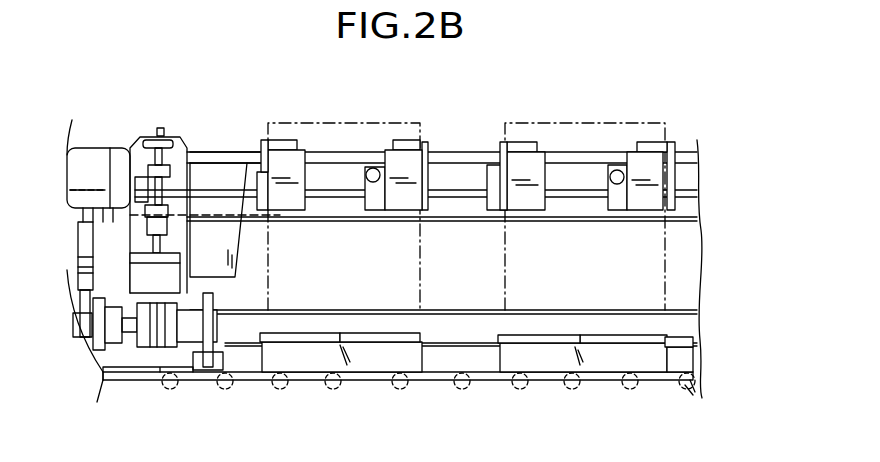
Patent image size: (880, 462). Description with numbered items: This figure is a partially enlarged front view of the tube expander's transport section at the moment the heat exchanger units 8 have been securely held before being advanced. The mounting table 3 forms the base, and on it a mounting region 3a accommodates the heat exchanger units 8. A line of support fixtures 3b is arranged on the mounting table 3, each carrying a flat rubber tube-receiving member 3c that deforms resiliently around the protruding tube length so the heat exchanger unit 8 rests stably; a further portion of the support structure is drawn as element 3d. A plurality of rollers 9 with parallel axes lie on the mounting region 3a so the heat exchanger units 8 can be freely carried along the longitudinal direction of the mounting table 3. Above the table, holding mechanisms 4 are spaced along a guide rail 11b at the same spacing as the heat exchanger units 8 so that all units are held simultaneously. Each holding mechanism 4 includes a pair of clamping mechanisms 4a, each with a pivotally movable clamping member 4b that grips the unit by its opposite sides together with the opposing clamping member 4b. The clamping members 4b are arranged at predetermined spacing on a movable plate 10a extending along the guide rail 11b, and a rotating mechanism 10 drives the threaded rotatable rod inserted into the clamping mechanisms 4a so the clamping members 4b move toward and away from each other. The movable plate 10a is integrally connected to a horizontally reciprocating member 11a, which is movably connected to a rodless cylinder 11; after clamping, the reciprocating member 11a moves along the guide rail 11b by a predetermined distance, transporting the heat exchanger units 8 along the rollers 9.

The mounting table 3 is at (437, 376).
The mounting region 3a is at (140, 372).
The support fixture 3b is at (315, 360).
The tube-receiving member 3c is at (377, 334).
The guide rail outer section 3d is at (329, 334).
The holding mechanism 4 is at (300, 150).
The clamping mechanism 4a is at (287, 211).
The clamping member 4b is at (265, 140).
The heat exchanger unit 8 is at (368, 124).
The roller 9 is at (223, 382).
The rotating mechanism 10 is at (130, 172).
The movable plate 10a is at (240, 150).
The rodless cylinder 11 is at (177, 348).
The horizontally reciprocating member 11a is at (240, 265).
The guide rail 11b is at (217, 145).